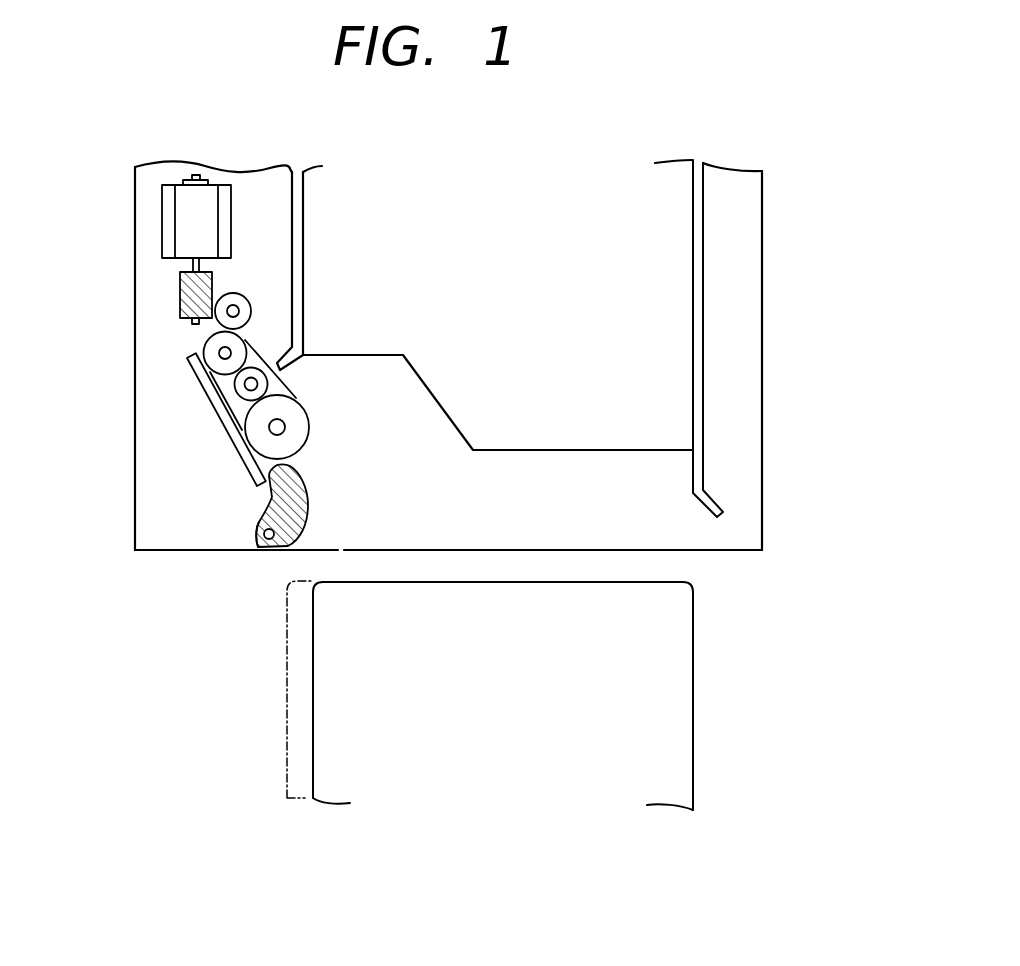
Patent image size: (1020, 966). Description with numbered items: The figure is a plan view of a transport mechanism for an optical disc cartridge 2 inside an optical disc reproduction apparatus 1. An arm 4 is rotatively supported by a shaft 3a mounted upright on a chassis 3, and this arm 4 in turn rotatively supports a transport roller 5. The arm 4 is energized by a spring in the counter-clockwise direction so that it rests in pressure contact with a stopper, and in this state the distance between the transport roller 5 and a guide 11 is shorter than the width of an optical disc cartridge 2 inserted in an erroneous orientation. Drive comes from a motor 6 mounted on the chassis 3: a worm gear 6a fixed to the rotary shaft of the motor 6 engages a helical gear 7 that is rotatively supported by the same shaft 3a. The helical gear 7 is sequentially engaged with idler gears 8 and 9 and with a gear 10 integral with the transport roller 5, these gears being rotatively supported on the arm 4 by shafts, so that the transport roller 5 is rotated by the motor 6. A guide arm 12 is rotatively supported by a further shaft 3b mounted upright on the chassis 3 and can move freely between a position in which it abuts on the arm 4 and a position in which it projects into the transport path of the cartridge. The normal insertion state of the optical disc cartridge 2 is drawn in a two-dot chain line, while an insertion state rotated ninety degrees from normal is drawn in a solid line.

The optical disc reproduction apparatus 1 is at (790, 244).
The optical disc cartridge 2 is at (287, 681).
The chassis 3 is at (754, 455).
The shaft 3a is at (207, 350).
The shaft 3b is at (268, 539).
The arm 4 is at (270, 464).
The transport roller 5 is at (309, 427).
The motor 6 is at (162, 215).
The worm gear 6a is at (180, 292).
The helical gear 7 is at (251, 311).
The idler gear 8 is at (210, 372).
The idler gear 9 is at (232, 428).
The gear 10 is at (233, 432).
The guide 11 is at (707, 190).
The guide arm 12 is at (263, 518).